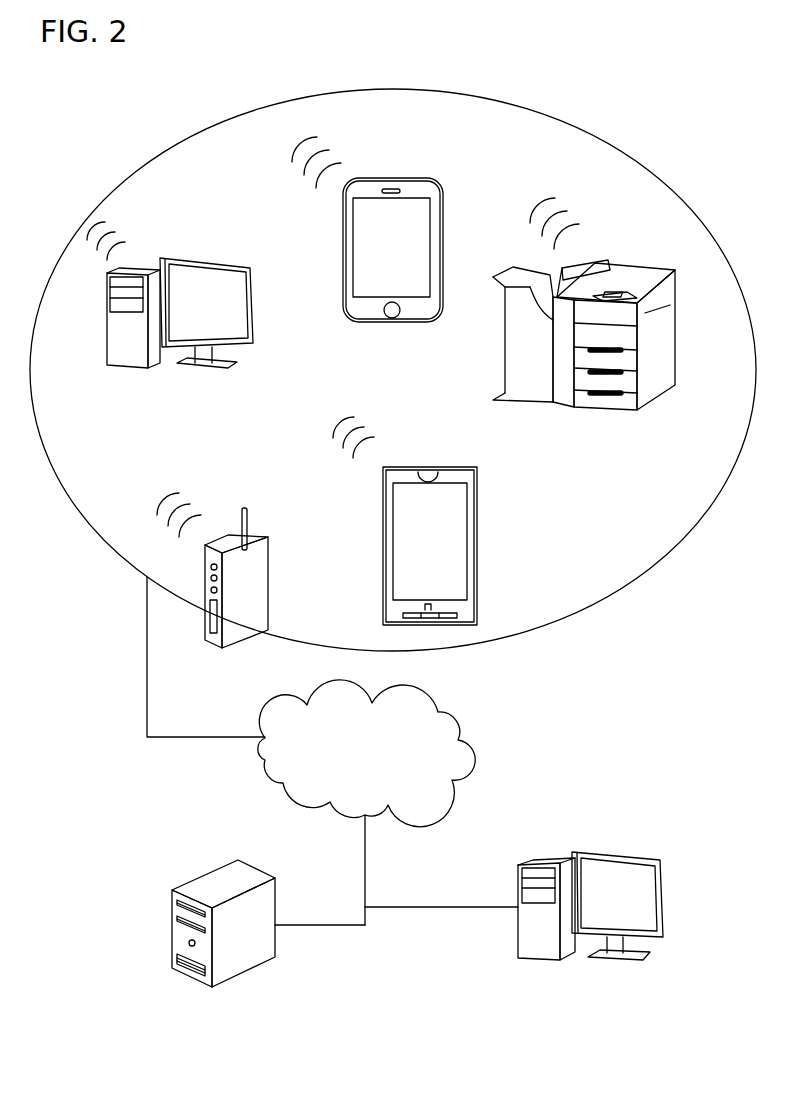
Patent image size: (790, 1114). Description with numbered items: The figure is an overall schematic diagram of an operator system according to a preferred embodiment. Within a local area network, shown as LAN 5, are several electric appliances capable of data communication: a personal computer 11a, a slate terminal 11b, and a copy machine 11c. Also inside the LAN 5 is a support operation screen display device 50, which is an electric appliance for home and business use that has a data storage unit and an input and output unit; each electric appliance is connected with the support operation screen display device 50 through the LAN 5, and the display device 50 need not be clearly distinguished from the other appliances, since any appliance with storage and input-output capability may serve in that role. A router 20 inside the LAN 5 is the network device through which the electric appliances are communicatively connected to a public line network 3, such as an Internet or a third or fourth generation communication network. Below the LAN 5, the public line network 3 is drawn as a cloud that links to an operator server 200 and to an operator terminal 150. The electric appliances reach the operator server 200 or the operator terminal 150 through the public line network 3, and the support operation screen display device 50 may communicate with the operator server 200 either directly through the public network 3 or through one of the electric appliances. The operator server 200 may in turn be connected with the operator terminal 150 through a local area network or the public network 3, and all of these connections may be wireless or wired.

The public line network 3 is at (432, 698).
The LAN 5 is at (625, 587).
The personal computer 11a is at (235, 260).
The slate terminal 11b is at (423, 182).
The copy machine 11c is at (637, 260).
The router 20 is at (272, 575).
The support operation screen display device 50 is at (466, 467).
The operator terminal 150 is at (645, 855).
The operator server 200 is at (241, 852).